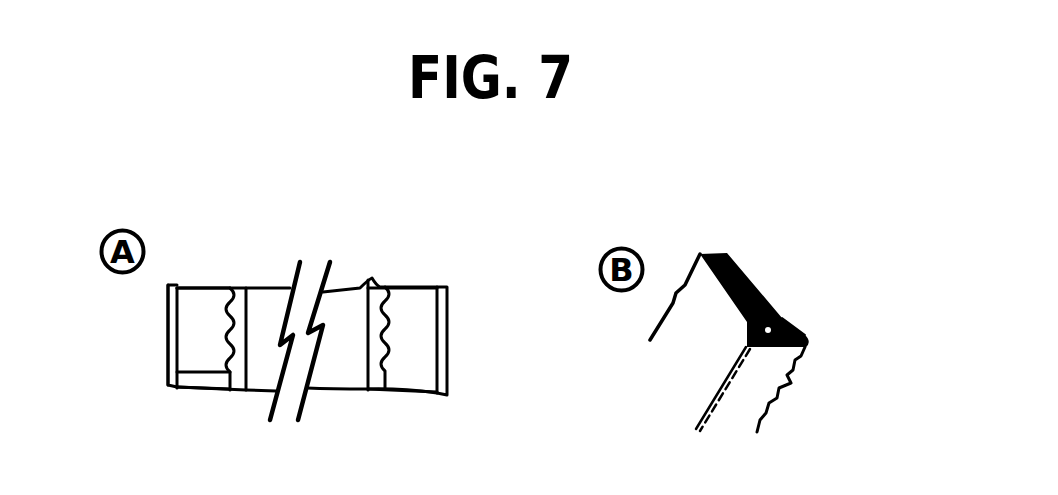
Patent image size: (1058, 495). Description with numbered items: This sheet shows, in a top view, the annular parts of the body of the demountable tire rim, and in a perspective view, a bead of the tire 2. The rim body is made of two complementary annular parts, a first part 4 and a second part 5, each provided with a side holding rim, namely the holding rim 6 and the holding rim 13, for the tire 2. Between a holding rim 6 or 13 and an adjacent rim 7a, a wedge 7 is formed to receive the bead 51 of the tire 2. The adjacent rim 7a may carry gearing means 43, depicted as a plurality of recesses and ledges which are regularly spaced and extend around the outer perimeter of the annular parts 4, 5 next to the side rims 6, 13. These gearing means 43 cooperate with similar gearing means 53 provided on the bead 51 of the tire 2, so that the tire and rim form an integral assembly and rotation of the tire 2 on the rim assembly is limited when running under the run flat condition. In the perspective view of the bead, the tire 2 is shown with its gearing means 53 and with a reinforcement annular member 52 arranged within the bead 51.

In FIG. 7B, the tire 2 is at (681, 357).
In FIG. 7A, the first part 4 is at (202, 405).
In FIG. 7A, the second part 5 is at (441, 417).
In FIG. 7A, the side holding rim 6 is at (167, 315).
In FIG. 7A, the wedge 7 is at (195, 323).
In FIG. 7A, the adjacent rim 7a is at (168, 371).
In FIG. 7A, the side holding rim 13 is at (441, 337).
In FIG. 7A, the gearing means 43 is at (232, 305).
In FIG. 7B, the bead 51 is at (783, 320).
In FIG. 7B, the reinforcement annular member 52 is at (790, 322).
In FIG. 7B, the gearing means 53 is at (790, 380).